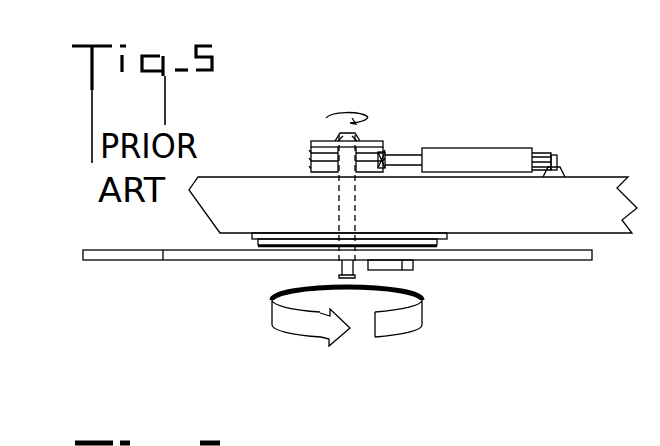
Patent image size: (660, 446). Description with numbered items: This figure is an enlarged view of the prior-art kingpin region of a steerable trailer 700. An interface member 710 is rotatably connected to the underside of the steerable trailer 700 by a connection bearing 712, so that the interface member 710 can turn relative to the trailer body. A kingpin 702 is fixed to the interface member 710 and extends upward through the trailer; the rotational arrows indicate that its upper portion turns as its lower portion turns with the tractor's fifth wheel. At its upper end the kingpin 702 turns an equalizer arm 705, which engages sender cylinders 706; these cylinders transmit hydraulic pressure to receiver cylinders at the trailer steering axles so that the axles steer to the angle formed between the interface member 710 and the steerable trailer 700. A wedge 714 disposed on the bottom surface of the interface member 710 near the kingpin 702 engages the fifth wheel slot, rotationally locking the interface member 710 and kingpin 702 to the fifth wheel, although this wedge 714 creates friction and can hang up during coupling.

The steerable trailer 700 is at (592, 190).
The kingpin 702 is at (345, 270).
The equalizer arm 705 is at (337, 135).
The sender cylinders 706 is at (487, 162).
The interface member 710 is at (189, 255).
The connection bearing 712 is at (435, 240).
The wedge 714 is at (410, 268).